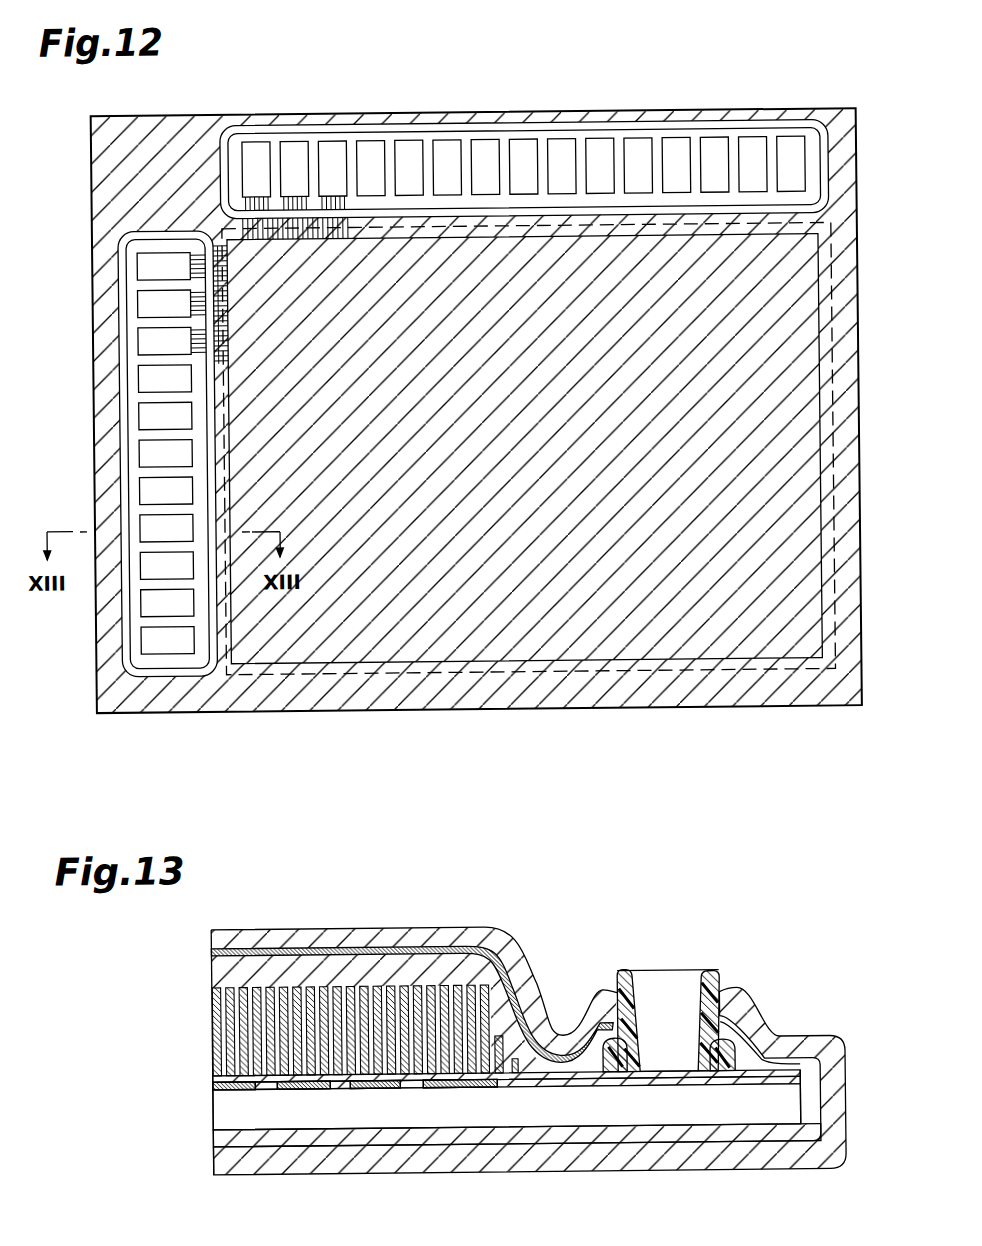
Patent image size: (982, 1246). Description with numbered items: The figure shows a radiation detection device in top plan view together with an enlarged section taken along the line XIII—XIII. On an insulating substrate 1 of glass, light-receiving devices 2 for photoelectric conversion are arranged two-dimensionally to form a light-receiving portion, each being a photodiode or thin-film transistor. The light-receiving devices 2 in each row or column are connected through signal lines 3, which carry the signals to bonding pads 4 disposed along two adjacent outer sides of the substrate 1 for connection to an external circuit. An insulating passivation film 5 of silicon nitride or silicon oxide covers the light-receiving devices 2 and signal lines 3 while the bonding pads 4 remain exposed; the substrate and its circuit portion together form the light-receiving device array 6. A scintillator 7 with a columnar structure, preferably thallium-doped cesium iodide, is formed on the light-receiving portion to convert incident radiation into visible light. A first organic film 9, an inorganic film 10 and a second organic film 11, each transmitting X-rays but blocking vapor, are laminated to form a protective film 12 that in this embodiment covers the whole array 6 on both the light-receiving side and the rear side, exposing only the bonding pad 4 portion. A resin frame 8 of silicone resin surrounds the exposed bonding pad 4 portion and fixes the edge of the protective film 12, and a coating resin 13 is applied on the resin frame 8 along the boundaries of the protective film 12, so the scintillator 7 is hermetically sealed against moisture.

In FIG. 12, the insulating substrate 1 is at (873, 114).
In FIG. 12, the light-receiving device 2 is at (823, 544).
In FIG. 13, the light-receiving device 2 is at (420, 1094).
In FIG. 12, the signal line 3 is at (240, 226).
In FIG. 12, the bonding pad 4 is at (300, 150).
In FIG. 13, the bonding pad 4 is at (659, 1074).
In FIG. 12, the passivation film 5 is at (397, 142).
In FIG. 13, the light-receiving device array 6 is at (200, 1075).
In FIG. 12, the scintillator 7 is at (834, 469).
In FIG. 13, the scintillator 7 is at (208, 1027).
In FIG. 12, the resin frame 8 is at (565, 126).
In FIG. 13, the resin frame 8 is at (207, 1137).
In FIG. 13, the first organic film 9 is at (208, 972).
In FIG. 13, the inorganic film 10 is at (208, 949).
In FIG. 13, the second organic film 11 is at (209, 935).
In FIG. 12, the protective film 12 is at (604, 706).
In FIG. 13, the protective film 12 is at (146, 916).
In FIG. 12, the coating resin 13 is at (475, 411).
In FIG. 13, the coating resin 13 is at (610, 988).